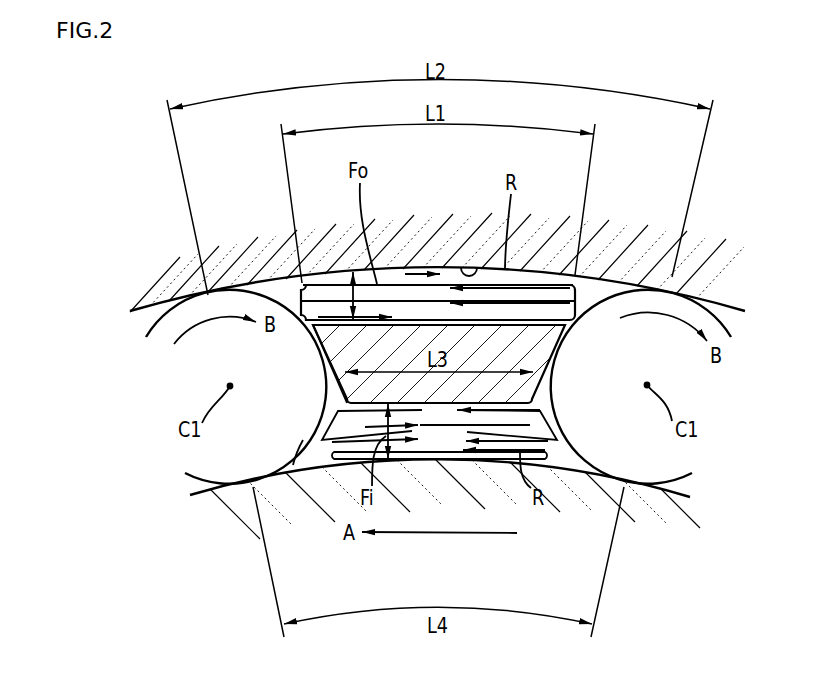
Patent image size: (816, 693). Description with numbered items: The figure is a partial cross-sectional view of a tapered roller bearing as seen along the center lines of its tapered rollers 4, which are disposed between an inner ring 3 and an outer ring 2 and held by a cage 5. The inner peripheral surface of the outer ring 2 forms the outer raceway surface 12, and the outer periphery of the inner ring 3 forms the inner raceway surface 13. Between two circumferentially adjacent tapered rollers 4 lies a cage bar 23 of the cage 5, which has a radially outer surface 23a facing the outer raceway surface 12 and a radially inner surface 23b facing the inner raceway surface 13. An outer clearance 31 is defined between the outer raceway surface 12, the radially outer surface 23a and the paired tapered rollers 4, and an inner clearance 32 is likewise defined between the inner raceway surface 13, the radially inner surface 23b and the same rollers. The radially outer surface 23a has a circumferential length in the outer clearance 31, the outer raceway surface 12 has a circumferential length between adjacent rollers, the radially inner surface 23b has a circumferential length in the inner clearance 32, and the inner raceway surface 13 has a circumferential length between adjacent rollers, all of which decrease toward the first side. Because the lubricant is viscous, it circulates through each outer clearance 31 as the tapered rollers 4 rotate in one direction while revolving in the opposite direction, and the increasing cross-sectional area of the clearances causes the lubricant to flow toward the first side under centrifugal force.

The outer ring 2 is at (621, 257).
The inner ring 3 is at (220, 522).
The tapered rollers 4 is at (167, 318).
The cage 5 is at (322, 353).
The outer raceway surface 12 is at (468, 268).
The inner raceway surface 13 is at (293, 465).
The cage bar 23 is at (342, 352).
The radially outer surface 23a is at (523, 328).
The radially inner surface 23b is at (482, 403).
The outer clearance 31 is at (407, 277).
The inner clearance 32 is at (560, 448).